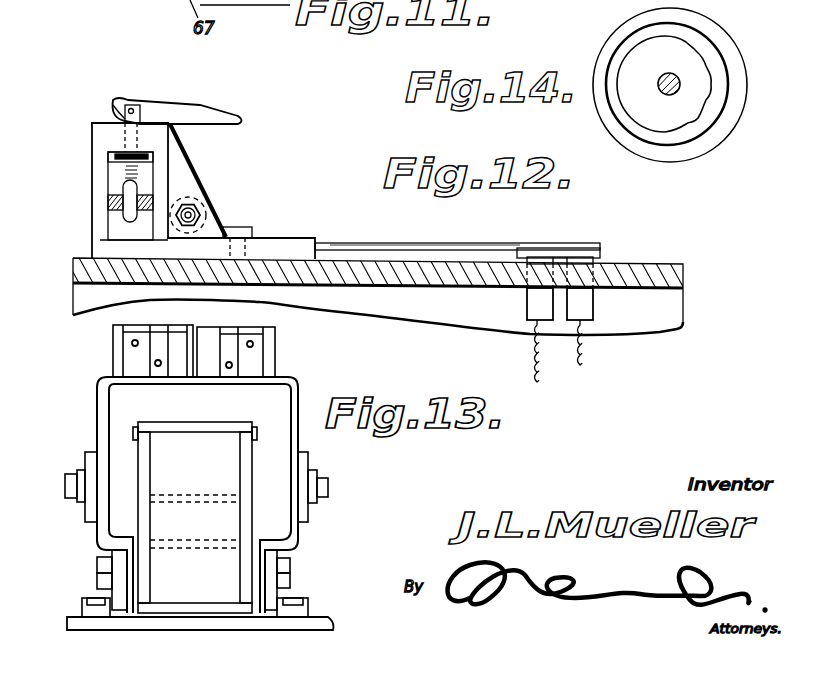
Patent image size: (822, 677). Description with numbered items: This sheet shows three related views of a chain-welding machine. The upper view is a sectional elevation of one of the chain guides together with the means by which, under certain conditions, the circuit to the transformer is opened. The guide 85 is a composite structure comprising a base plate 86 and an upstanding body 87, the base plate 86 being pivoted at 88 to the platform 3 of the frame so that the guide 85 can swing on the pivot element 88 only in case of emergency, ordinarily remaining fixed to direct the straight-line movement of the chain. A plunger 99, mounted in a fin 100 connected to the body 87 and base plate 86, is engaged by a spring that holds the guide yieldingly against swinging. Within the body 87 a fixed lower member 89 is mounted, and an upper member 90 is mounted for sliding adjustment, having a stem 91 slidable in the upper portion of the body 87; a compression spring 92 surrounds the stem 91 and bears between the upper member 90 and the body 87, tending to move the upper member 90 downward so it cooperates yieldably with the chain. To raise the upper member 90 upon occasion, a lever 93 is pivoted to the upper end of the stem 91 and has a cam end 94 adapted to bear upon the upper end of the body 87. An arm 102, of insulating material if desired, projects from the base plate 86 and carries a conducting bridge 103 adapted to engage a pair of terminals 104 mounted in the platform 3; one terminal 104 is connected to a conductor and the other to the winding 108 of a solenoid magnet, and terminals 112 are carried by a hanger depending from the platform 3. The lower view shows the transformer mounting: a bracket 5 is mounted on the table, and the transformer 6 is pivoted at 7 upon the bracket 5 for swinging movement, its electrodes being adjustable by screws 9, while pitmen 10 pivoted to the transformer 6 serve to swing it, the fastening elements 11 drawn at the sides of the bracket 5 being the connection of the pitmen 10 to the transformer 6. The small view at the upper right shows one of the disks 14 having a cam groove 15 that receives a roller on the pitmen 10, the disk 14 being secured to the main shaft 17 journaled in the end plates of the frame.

In FIG. 12, the platform 3 is at (683, 276).
In FIG. 12, the guide 85 is at (172, 191).
In FIG. 12, the base plate 86 is at (302, 246).
In FIG. 12, the upstanding body 87 is at (97, 147).
In FIG. 12, the pivot element 88 is at (243, 227).
In FIG. 12, the fixed lower member 89 is at (110, 236).
In FIG. 12, the upper member 90 is at (147, 183).
In FIG. 12, the stem 91 is at (136, 108).
In FIG. 12, the compression spring 92 is at (150, 156).
In FIG. 12, the lever 93 is at (212, 117).
In FIG. 12, the cam end 94 is at (113, 110).
In FIG. 12, the plunger 99 is at (197, 211).
In FIG. 12, the fin 100 is at (185, 197).
In FIG. 12, the arm 102 is at (453, 248).
In FIG. 12, the conducting bridge 103 is at (561, 250).
In FIG. 12, the terminals 104 is at (552, 306).
In FIG. 12, the winding 108 is at (580, 365).
In FIG. 12, the terminals 112 is at (537, 382).
In FIG. 13, the bracket 5 is at (268, 604).
In FIG. 13, the transformer 6 is at (300, 398).
In FIG. 13, the pivot 7 is at (97, 575).
In FIG. 13, the screws 9 is at (132, 343).
In FIG. 13, the pitmen 10 is at (85, 505).
In FIG. 13, the bolt 11 is at (65, 485).
In FIG. 14, the disks 14 is at (735, 42).
In FIG. 14, the cam grooves 15 is at (718, 113).
In FIG. 14, the main shaft 17 is at (669, 95).